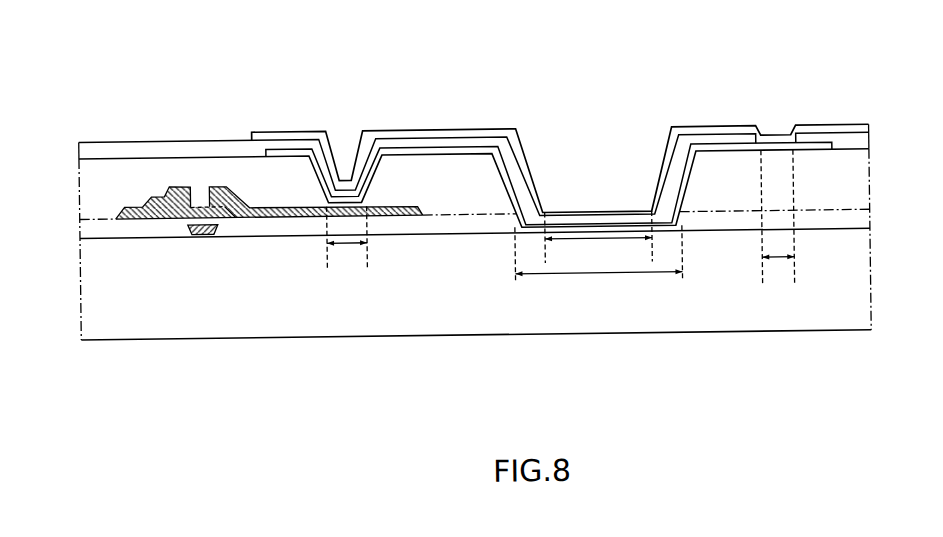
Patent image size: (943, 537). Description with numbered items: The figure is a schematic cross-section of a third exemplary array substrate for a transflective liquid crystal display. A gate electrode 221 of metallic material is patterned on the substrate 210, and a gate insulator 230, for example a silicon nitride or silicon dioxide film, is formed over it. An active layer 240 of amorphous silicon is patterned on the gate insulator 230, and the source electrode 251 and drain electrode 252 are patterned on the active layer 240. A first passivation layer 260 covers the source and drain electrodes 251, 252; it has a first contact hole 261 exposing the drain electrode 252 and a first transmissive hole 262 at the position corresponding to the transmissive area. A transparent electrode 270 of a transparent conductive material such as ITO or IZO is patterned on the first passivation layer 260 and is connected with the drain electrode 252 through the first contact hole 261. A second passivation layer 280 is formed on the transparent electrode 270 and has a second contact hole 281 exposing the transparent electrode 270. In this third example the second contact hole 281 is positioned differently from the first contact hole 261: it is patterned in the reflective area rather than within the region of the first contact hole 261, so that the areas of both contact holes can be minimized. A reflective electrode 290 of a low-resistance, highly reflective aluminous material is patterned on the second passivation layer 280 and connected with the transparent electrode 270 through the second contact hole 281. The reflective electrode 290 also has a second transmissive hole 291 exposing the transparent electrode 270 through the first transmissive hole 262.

The substrate 210 is at (460, 308).
The gate electrode 221 is at (206, 238).
The gate insulator 230 is at (267, 235).
The active layer 240 is at (204, 204).
The source electrode 251 is at (177, 185).
The drain electrode 252 is at (235, 186).
The first passivation layer 260 is at (98, 171).
The first contact hole 261 is at (347, 240).
The first transmissive hole 262 is at (599, 259).
The transparent electrode 270 is at (496, 149).
The second passivation layer 280 is at (135, 151).
The second contact hole 281 is at (779, 218).
The reflective electrode 290 is at (477, 128).
The second transmissive hole 291 is at (599, 237).